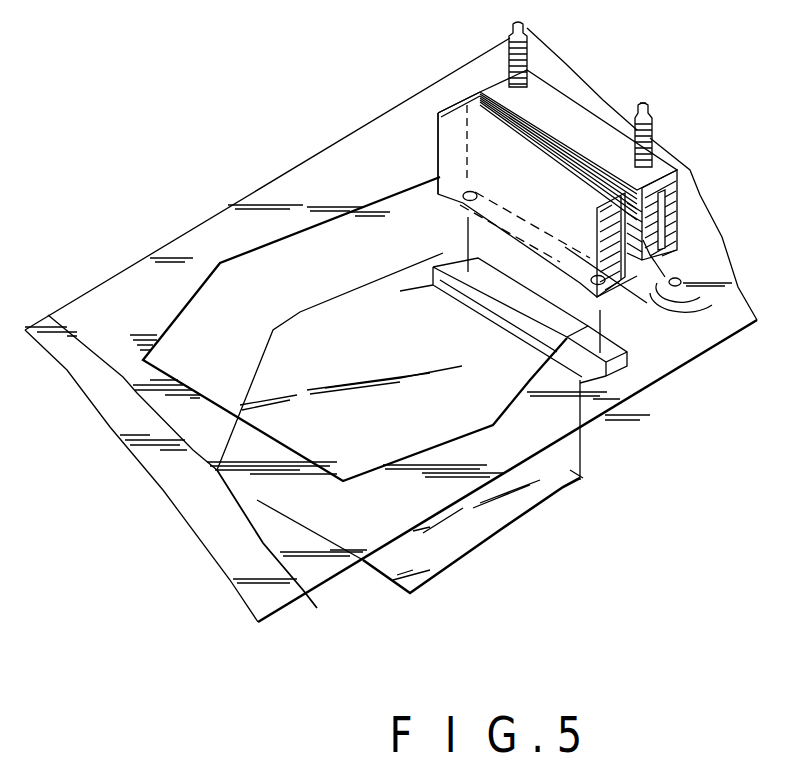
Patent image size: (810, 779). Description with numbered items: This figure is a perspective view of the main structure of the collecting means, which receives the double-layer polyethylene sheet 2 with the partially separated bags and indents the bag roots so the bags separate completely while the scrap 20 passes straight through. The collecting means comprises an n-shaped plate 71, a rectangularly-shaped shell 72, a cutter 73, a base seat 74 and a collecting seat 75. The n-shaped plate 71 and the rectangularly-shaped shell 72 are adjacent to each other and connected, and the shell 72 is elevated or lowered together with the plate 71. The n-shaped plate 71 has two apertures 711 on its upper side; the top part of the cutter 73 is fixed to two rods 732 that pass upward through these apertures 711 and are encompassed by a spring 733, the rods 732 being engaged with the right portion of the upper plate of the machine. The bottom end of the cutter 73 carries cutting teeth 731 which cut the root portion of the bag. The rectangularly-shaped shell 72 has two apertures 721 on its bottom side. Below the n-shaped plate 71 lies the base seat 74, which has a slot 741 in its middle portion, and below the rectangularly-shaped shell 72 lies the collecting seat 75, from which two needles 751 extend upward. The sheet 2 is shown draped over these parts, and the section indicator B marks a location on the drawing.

The sheet 2 is at (192, 230).
The scrap 20 is at (222, 222).
The n-shaped plate 71 is at (662, 163).
The apertures 711 is at (527, 27).
The rectangularly-shaped shell 72 is at (438, 160).
The apertures 721 is at (463, 198).
The cutter 73 is at (658, 222).
The cutting teeth 731 is at (680, 258).
The rods 732 is at (645, 103).
The spring 733 is at (650, 125).
The base seat 74 is at (697, 303).
The slot 741 is at (690, 280).
The collecting seat 75 is at (613, 370).
The needles 751 is at (602, 320).
The section line B is at (580, 480).